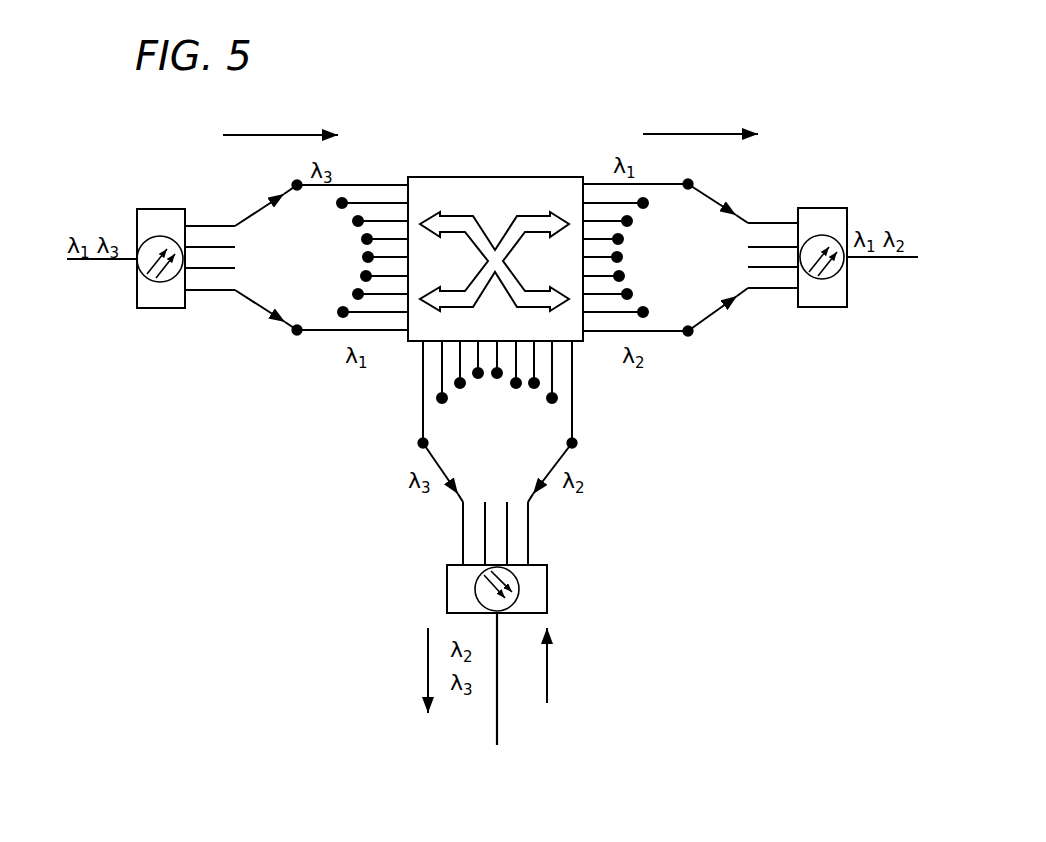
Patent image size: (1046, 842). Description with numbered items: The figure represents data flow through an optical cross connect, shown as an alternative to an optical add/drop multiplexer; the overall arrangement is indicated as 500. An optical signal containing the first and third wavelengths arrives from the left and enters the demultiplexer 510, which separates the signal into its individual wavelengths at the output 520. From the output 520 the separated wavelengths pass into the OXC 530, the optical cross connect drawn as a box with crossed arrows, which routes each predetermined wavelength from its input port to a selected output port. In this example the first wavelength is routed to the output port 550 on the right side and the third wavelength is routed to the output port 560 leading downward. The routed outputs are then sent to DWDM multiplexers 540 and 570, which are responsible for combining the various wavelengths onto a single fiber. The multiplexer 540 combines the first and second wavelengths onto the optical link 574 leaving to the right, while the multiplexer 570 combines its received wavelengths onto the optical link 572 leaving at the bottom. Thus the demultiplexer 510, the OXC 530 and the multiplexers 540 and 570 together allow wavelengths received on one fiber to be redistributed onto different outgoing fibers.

The optical network 500 is at (378, 125).
The demultiplexer 510 is at (160, 208).
The output 520 is at (292, 335).
The OXC 530 is at (495, 177).
The DWDM multiplexer 540 is at (822, 208).
The output port 550 is at (698, 334).
The output port 560 is at (576, 405).
The DWDM multiplexer 570 is at (549, 586).
The optical link 572 is at (499, 723).
The optical link 574 is at (880, 261).